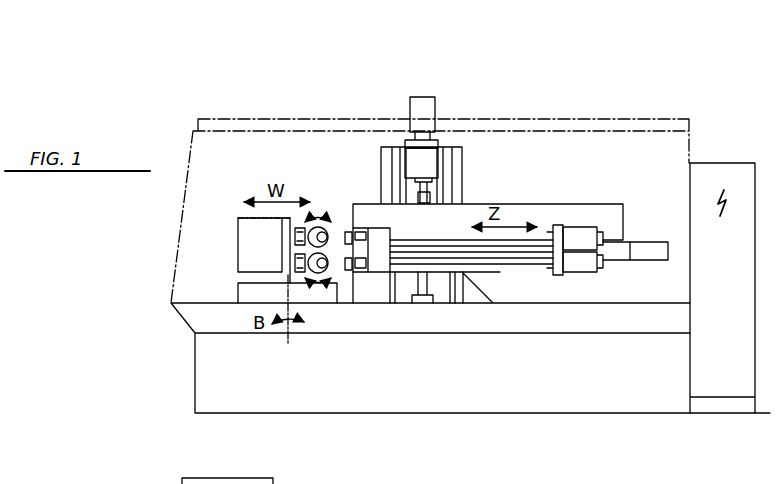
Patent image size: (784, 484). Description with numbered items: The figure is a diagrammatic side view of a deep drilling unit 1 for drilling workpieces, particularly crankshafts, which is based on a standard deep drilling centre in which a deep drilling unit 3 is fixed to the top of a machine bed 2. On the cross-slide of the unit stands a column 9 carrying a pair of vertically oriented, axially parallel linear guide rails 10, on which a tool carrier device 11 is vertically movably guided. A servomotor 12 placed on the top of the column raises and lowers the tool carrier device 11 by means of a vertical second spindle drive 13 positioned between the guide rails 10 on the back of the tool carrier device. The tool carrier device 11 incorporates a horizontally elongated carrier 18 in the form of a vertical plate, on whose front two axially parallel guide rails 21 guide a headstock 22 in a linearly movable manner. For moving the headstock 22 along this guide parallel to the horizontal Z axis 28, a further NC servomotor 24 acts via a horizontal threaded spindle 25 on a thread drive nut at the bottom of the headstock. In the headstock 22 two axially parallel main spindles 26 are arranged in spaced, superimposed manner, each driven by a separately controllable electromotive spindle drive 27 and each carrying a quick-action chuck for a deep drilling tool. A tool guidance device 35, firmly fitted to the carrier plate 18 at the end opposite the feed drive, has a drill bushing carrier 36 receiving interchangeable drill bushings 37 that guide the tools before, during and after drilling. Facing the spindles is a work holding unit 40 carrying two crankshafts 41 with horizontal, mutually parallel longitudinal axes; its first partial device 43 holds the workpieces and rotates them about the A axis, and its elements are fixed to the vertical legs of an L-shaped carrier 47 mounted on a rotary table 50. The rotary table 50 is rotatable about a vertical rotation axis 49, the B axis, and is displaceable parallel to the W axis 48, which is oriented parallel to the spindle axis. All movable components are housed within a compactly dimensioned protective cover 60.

The deep drilling unit 1 is at (712, 101).
The machine bed 2 is at (658, 328).
The deep drilling unit 3 is at (559, 136).
The column 9 is at (384, 166).
The linear guide rails 10 is at (396, 186).
The tool carrier device 11 is at (592, 189).
The servomotor 12 is at (432, 112).
The second spindle drive 13 is at (420, 184).
The carrier 18 is at (612, 205).
The guide rails 21 is at (522, 255).
The headstock 22 is at (580, 276).
The servomotor 24 is at (655, 253).
The threaded spindle 25 is at (513, 243).
The main spindles 26 is at (553, 232).
The spindle drive 27 is at (602, 233).
The Z axis 28 is at (508, 240).
The tool guidance device 35 is at (350, 216).
The drill bushing carrier 36 is at (393, 232).
The drill bushings 37 is at (357, 235).
The work holding unit 40 is at (199, 241).
The crankshafts 41 is at (318, 222).
The first partial device 43 is at (237, 269).
The L-shaped carrier 47 is at (238, 220).
The W axis 48 is at (270, 200).
The rotation axis 49 is at (288, 345).
The rotary table 50 is at (228, 295).
The protective cover 60 is at (655, 125).